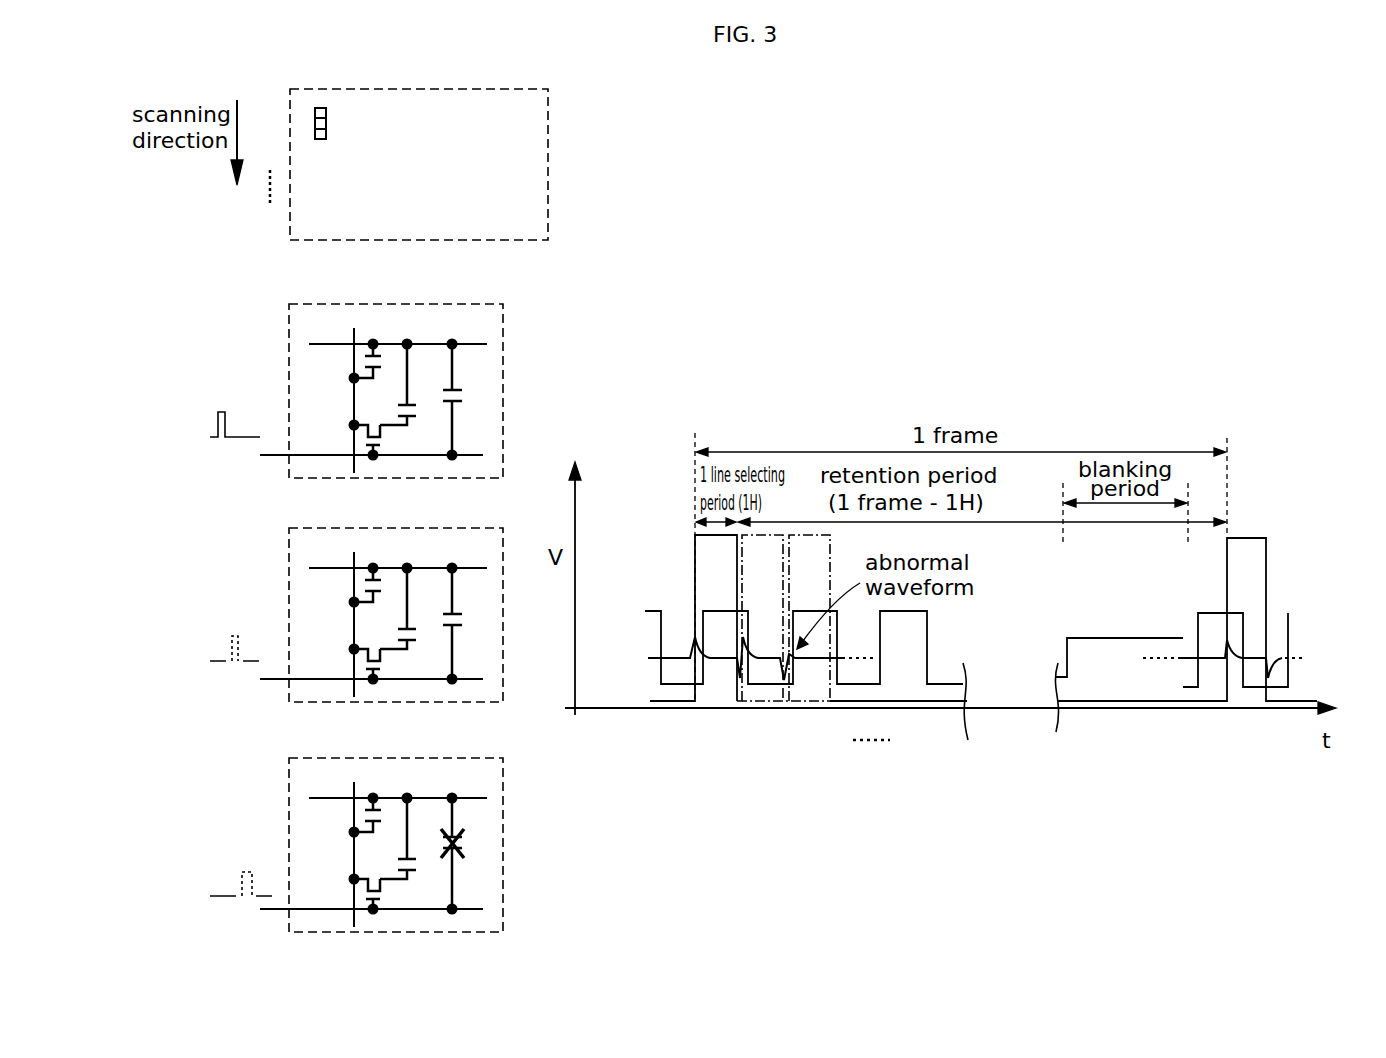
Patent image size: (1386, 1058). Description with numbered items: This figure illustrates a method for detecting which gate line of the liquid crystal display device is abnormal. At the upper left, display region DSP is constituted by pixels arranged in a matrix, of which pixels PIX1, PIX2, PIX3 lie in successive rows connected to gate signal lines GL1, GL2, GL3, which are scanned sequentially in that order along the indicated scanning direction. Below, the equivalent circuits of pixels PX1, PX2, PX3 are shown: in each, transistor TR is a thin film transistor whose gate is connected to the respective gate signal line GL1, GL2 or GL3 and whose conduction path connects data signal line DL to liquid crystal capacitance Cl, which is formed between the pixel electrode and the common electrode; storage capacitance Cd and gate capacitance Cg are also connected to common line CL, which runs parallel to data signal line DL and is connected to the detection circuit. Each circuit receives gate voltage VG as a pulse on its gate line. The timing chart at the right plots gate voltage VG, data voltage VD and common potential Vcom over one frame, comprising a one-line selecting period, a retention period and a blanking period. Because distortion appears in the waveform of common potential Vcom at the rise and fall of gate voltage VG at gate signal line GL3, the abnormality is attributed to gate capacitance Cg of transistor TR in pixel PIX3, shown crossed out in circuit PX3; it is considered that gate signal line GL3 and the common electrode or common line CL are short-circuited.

The display region DSP is at (419, 164).
The pixel PIX1 is at (326, 112).
The pixel PIX2 is at (326, 123).
The pixel PIX3 is at (326, 135).
The gate signal line GL1 is at (764, 424).
The gate signal line GL2 is at (518, 430).
The gate signal line GL3 is at (544, 521).
The pixel PX1 is at (396, 377).
The pixel PX2 is at (396, 601).
The pixel PX3 is at (396, 831).
The data signal line DL is at (338, 615).
The common line CL is at (392, 559).
The storage capacitance Cd is at (350, 588).
The liquid crystal capacitance Cl is at (398, 611).
The transistor TR is at (373, 654).
The gate capacitance Cg is at (467, 626).
The gate voltage VG is at (739, 656).
The data voltage VD is at (950, 637).
The common potential Vcom is at (943, 658).